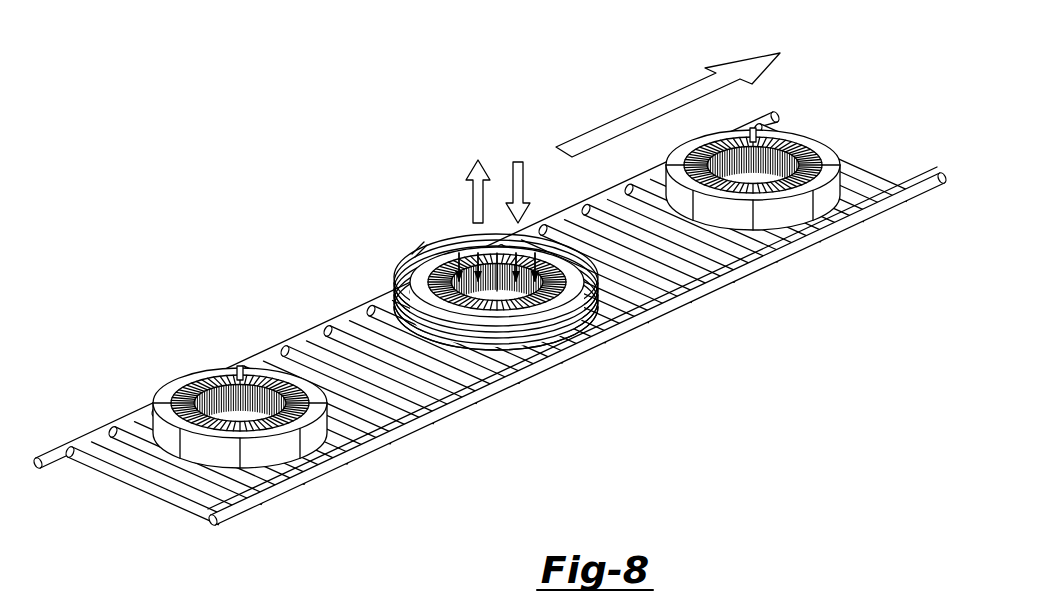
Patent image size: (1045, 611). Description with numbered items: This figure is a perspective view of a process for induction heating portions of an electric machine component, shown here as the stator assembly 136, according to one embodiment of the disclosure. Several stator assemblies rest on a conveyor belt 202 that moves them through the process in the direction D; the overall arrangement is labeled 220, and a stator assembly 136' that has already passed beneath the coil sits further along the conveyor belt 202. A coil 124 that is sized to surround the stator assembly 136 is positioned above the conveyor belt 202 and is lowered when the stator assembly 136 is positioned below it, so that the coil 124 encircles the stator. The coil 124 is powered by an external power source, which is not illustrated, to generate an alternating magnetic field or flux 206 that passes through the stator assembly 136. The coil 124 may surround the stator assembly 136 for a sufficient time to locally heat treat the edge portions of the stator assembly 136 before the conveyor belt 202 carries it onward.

The stator processing system 220 is at (278, 153).
The conveyor belt 202 is at (92, 441).
The stator assembly 136 is at (346, 357).
The processed stator 136' is at (784, 163).
The coil 124 is at (400, 256).
The alternating magnetic field or flux 206 is at (452, 250).
The direction of travel D is at (668, 105).